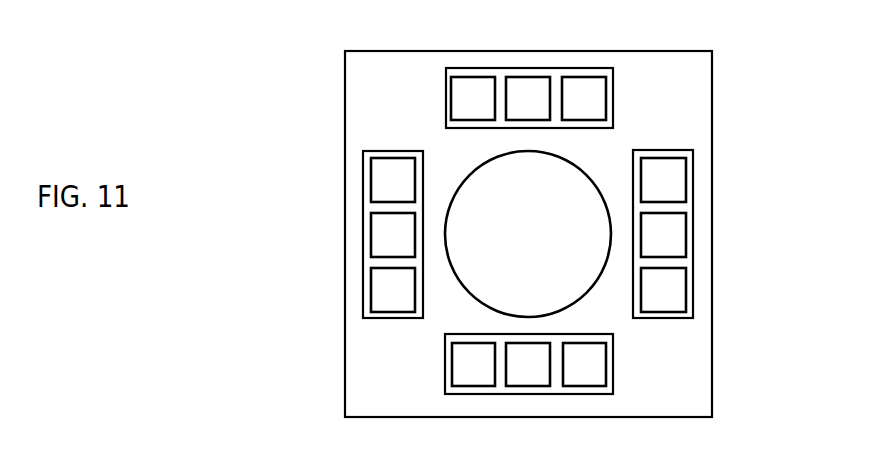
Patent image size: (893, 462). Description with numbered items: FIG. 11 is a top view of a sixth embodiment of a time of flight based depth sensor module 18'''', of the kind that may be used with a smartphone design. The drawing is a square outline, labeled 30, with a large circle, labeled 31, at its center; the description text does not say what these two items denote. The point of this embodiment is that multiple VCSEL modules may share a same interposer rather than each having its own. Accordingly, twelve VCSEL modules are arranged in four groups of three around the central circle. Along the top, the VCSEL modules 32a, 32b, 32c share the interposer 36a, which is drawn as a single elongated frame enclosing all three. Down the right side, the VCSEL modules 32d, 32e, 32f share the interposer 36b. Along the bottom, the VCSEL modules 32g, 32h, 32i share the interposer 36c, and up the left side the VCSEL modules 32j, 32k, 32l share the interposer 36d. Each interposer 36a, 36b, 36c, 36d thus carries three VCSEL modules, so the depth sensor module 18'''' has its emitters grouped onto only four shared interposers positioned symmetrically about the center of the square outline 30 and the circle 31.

The depth sensor module 18'''' is at (271, 27).
The substrate / carrier 30 is at (345, 120).
The central opening / lens aperture 31 is at (475, 168).
The VCSEL module 32a is at (458, 77).
The VCSEL module 32b is at (523, 77).
The VCSEL module 32c is at (585, 77).
The VCSEL module 32d is at (687, 177).
The VCSEL module 32e is at (685, 232).
The VCSEL module 32f is at (686, 283).
The VCSEL module 32g is at (580, 385).
The VCSEL module 32h is at (522, 387).
The VCSEL module 32i is at (473, 387).
The VCSEL module 32j is at (372, 282).
The VCSEL module 32k is at (372, 230).
The VCSEL module 32l is at (372, 182).
The interposer 36a is at (607, 68).
The interposer 36b is at (695, 295).
The interposer 36c is at (460, 396).
The interposer 36d is at (363, 297).